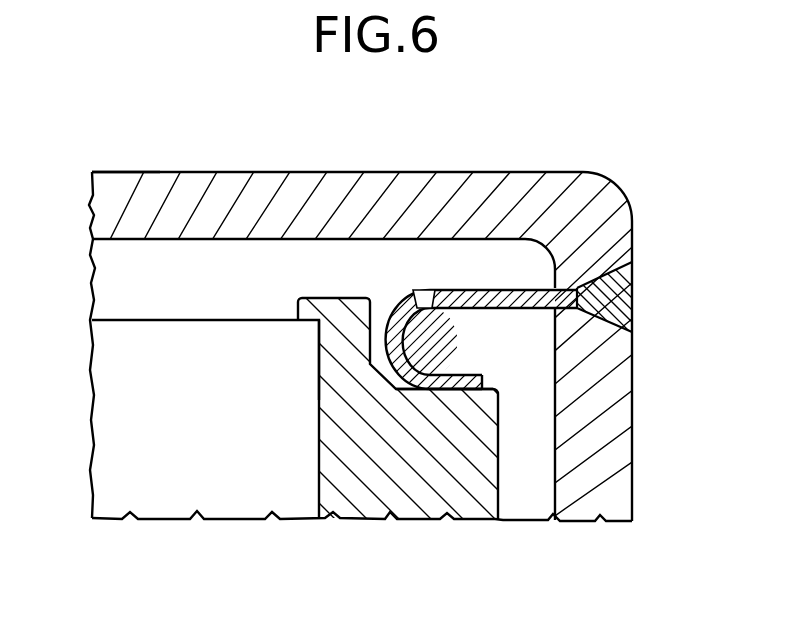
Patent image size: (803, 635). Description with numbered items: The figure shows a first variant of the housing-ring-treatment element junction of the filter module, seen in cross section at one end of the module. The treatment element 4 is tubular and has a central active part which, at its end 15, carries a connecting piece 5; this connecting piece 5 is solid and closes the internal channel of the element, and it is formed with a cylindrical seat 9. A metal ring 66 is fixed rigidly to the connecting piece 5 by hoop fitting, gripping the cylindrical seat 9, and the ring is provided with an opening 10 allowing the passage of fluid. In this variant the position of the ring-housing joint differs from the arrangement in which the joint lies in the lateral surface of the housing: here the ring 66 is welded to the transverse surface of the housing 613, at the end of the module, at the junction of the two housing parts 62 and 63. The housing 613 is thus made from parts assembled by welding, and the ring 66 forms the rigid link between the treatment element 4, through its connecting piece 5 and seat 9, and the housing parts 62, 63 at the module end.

The housing 613 is at (100, 171).
The part of the housing 63 is at (158, 198).
The treatment element 4 is at (232, 318).
The end of the element 15 is at (310, 363).
The connecting piece 5 is at (346, 297).
The opening 10 is at (417, 289).
The ring 66 is at (524, 296).
The cylindrical seat 9 is at (443, 393).
The part of the housing 62 is at (615, 380).